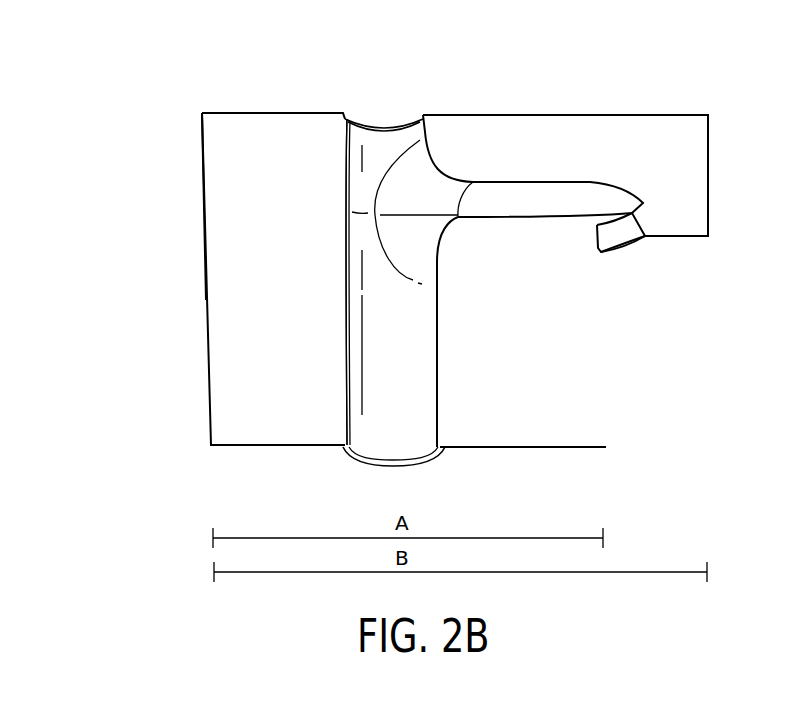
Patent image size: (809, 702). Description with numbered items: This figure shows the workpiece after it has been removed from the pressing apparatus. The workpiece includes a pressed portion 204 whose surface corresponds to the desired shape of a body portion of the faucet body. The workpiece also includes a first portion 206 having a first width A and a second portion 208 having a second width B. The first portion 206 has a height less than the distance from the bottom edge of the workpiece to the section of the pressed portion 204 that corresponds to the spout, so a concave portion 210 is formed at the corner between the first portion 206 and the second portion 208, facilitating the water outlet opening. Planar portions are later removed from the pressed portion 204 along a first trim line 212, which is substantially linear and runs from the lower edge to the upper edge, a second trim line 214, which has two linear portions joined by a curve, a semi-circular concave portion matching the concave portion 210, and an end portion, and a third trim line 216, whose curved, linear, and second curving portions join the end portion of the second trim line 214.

The pressed portion 204 is at (378, 82).
The first portion 206 is at (282, 330).
The second portion 208 is at (245, 157).
The concave portion 210 is at (627, 228).
The first trim line 212 is at (345, 290).
The second trim line 214 is at (438, 358).
The third trim line 216 is at (518, 182).